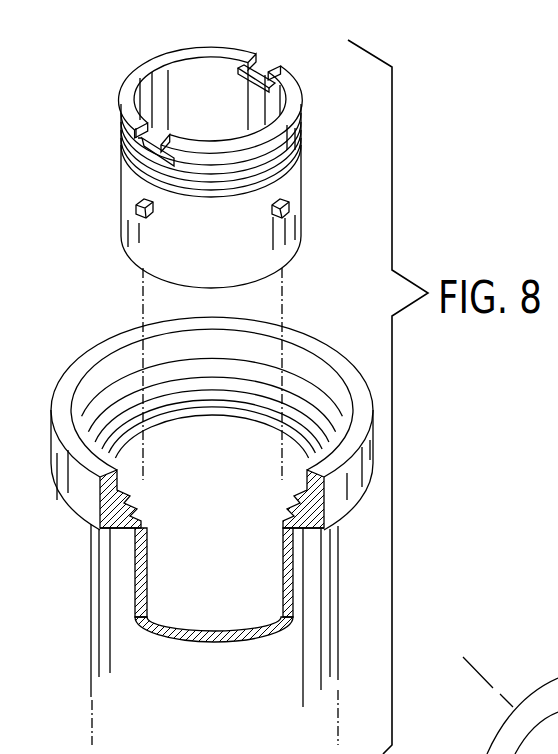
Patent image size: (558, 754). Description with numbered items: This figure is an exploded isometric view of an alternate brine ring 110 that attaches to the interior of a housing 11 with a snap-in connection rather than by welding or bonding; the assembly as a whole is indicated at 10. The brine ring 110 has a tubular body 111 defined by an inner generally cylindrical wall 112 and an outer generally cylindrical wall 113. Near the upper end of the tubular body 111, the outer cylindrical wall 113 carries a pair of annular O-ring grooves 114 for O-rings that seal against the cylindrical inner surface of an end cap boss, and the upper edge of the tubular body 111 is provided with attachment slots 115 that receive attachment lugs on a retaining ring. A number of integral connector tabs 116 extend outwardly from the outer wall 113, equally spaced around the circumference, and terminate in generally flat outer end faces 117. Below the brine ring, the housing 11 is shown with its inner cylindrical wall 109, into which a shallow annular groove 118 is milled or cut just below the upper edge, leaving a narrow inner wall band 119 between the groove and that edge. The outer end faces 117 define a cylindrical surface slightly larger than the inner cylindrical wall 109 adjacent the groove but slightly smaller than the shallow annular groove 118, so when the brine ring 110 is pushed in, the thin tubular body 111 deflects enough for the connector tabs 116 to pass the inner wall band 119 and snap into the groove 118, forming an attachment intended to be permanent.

The container assembly 10 is at (440, 695).
The housing 11 is at (113, 676).
The inner cylindrical wall 109 is at (168, 590).
The brine ring 110 is at (101, 182).
The tubular body 111 is at (292, 188).
The inner cylindrical wall 112 is at (193, 97).
The outer cylindrical wall 113 is at (243, 272).
The annular O-ring grooves 114 is at (215, 197).
The attachment slots 115 is at (272, 67).
The connector tabs 116 is at (289, 208).
The outer end faces 117 is at (136, 209).
The shallow annular groove 118 is at (168, 425).
The inner wall band 119 is at (218, 408).